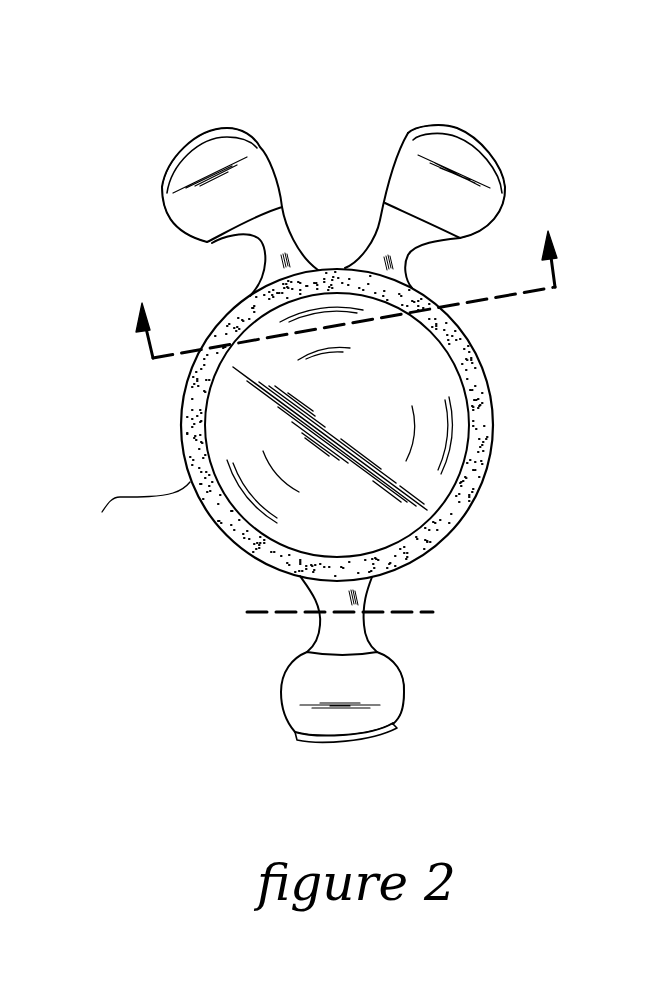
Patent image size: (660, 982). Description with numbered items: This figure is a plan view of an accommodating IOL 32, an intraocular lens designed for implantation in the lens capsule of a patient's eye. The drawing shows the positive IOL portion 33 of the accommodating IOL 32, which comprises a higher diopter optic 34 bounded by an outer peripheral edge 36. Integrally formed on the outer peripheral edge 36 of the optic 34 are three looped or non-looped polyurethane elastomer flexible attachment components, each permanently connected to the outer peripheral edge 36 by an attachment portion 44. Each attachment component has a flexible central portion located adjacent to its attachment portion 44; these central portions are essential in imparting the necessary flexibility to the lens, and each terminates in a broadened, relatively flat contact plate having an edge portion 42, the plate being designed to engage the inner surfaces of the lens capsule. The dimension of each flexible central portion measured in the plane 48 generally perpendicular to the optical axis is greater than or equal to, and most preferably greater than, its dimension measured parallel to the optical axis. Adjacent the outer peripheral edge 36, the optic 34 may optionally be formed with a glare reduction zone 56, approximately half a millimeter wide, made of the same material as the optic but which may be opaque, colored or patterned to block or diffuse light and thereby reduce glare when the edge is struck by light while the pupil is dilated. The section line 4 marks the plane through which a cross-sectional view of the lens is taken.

The accommodating IOL 32 is at (339, 425).
The positive IOL portion 33 is at (480, 367).
The higher diopter optic 34 is at (228, 430).
The outer peripheral edge 36 is at (118, 516).
The edge portion 42 is at (380, 227).
The attachment portion 44 is at (411, 288).
The plane 48- 48 is at (342, 611).
The glare reduction zone 56 is at (473, 483).
The section line 4- 4 is at (349, 294).